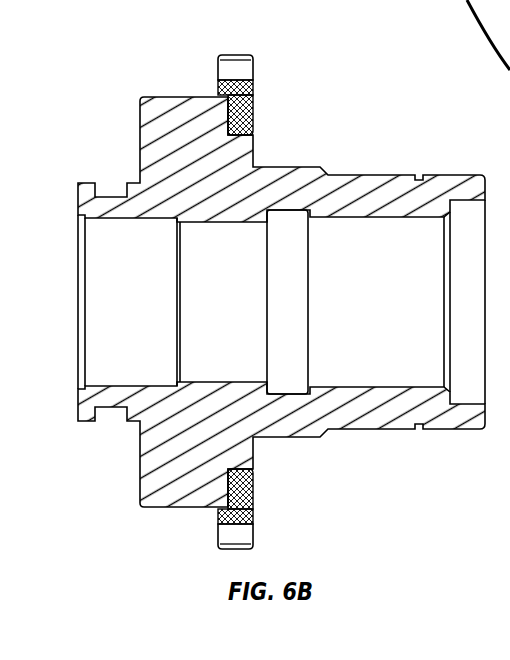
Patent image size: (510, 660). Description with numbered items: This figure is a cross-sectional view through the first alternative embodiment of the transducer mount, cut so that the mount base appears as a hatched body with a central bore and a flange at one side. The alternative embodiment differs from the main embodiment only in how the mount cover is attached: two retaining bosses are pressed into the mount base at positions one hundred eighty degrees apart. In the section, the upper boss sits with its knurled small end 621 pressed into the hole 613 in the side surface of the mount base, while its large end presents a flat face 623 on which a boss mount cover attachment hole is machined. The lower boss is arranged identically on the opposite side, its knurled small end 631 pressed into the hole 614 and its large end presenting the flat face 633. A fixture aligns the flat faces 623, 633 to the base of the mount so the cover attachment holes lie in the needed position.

The hole 613 is at (250, 135).
The hole 614 is at (255, 470).
The small end 621 is at (253, 113).
The flat face 623 is at (255, 85).
The small end 631 is at (255, 488).
The flat face 633 is at (255, 518).